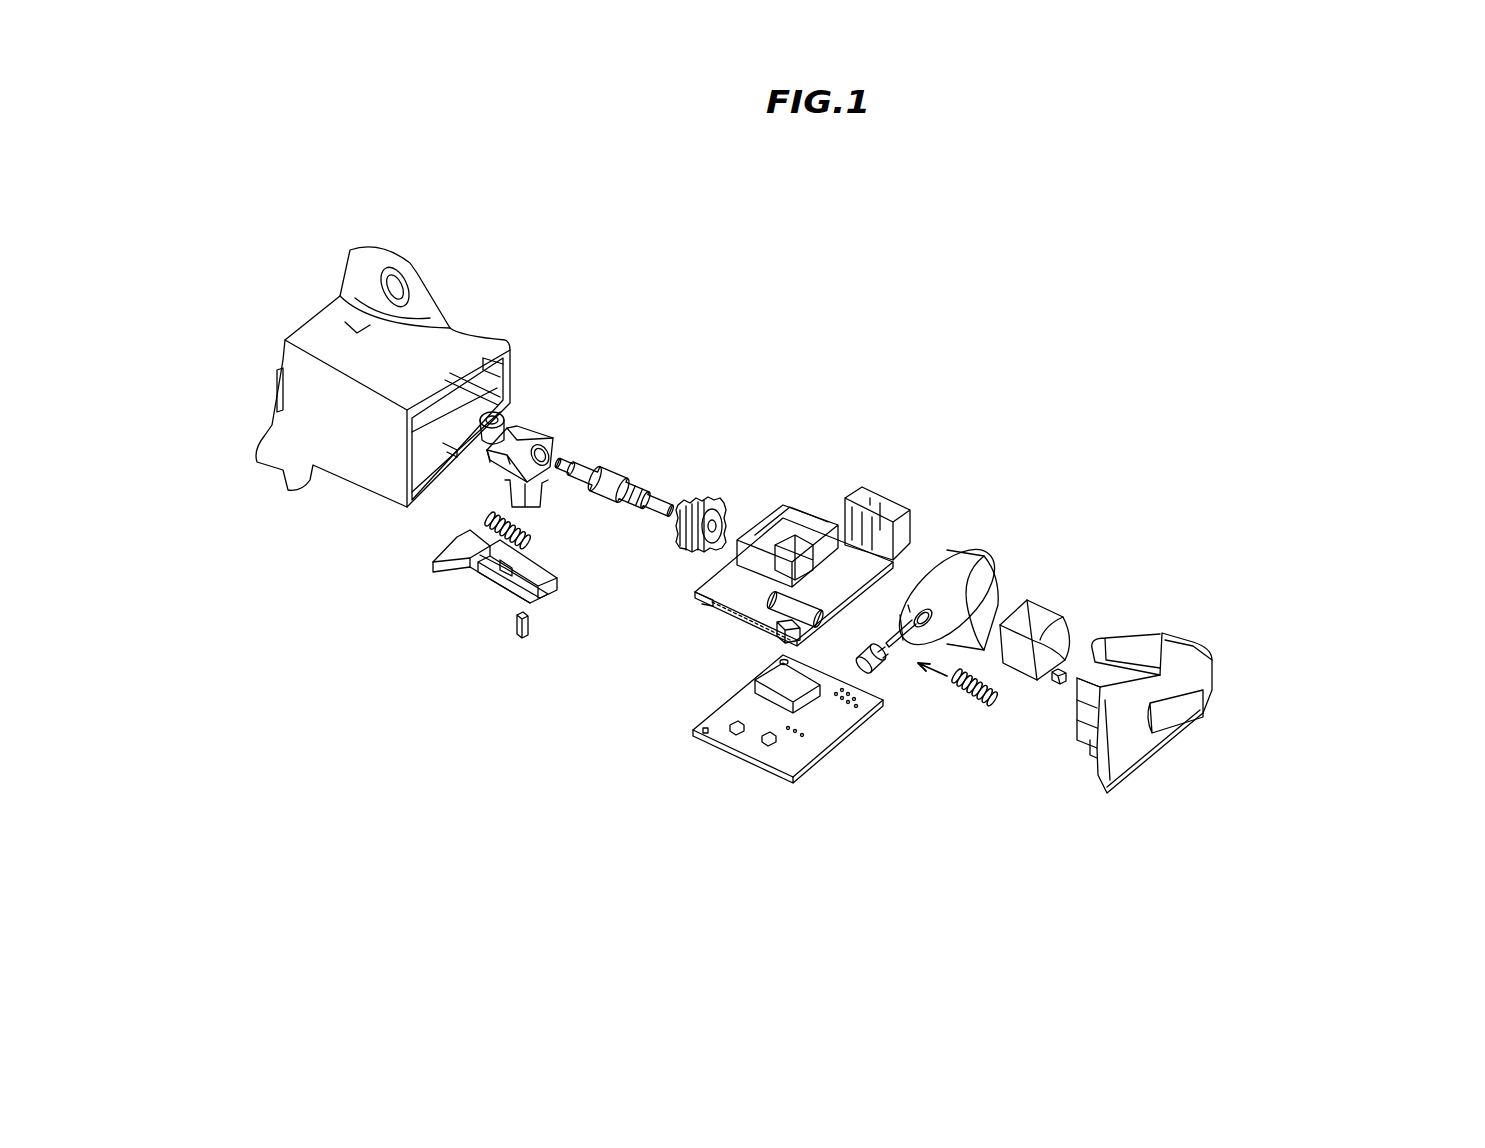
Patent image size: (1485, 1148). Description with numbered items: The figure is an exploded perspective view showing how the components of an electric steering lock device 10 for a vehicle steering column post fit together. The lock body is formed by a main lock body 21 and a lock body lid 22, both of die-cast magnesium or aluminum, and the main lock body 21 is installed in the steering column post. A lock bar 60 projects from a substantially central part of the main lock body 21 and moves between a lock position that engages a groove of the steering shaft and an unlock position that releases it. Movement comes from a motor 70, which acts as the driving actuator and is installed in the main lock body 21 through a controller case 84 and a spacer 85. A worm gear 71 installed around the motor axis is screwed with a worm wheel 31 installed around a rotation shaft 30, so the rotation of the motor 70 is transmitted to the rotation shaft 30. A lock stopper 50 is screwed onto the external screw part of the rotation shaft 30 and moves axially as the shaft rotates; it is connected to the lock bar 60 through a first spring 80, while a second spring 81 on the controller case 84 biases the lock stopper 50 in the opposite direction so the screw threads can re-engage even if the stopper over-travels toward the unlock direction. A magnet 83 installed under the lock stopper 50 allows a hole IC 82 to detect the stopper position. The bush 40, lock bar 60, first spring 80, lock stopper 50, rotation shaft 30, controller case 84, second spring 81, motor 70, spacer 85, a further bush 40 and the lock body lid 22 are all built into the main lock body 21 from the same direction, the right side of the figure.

The steering lock device 10 is at (914, 330).
The main lock body 21 is at (460, 333).
The lock body lid 22 is at (1202, 672).
The rotation shaft 30 is at (630, 480).
The worm wheel 31 is at (710, 497).
The bush 40 is at (490, 400).
The lock stopper 50 is at (525, 440).
The lock bar 60 is at (470, 560).
The motor 70 is at (957, 563).
The worm gear 71 is at (883, 663).
The first spring 80 is at (488, 521).
The second spring 81 is at (987, 697).
The hole IC 82 is at (768, 743).
The magnet 83 is at (516, 627).
The controller case 84 is at (793, 523).
The spacer 85 is at (1033, 617).